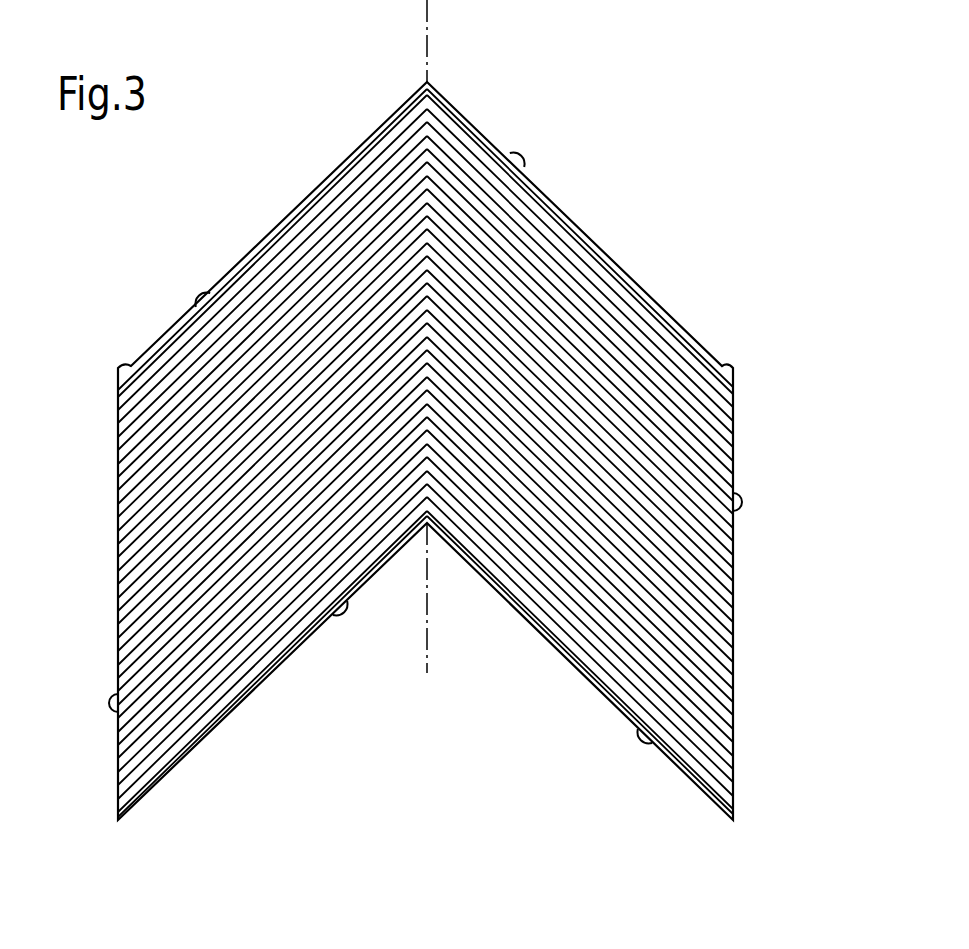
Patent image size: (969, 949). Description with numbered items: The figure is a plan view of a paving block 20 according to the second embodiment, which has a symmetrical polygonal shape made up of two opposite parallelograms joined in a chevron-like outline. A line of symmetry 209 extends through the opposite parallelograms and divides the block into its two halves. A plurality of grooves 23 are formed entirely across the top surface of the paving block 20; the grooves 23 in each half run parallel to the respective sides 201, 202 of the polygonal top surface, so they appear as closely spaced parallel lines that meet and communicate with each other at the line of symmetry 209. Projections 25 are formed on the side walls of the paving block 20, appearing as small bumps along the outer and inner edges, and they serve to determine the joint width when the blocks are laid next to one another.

The paving block 20 is at (482, 413).
The grooves 23 is at (690, 338).
The projections 25 is at (520, 154).
The side 201 is at (268, 692).
The side 202 is at (580, 692).
The line of symmetry 209 is at (425, 640).